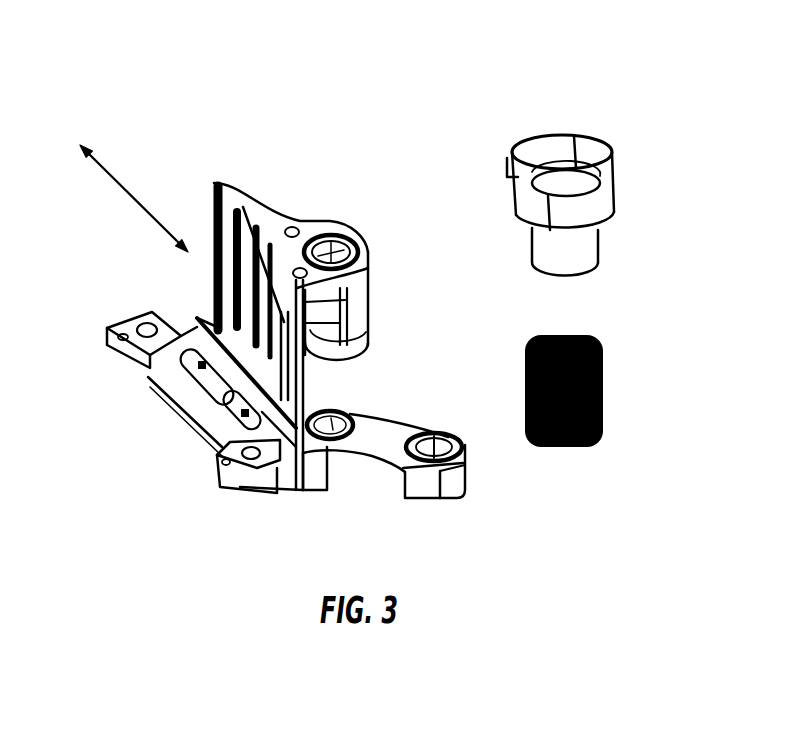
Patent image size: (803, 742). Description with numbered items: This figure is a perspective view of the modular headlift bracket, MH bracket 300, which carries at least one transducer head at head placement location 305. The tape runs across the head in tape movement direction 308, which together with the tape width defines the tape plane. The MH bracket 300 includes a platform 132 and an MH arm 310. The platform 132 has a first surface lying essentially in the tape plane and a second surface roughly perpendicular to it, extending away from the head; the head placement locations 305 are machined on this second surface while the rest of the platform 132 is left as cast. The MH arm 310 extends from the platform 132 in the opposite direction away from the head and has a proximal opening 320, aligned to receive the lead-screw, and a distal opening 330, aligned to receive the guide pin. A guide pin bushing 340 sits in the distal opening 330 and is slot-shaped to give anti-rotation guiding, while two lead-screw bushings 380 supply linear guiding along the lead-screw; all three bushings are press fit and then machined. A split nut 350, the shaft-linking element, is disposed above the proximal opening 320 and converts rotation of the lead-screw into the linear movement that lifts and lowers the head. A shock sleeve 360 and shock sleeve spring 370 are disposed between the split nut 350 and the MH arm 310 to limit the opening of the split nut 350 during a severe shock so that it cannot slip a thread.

The MH bracket 300 is at (263, 54).
The tape movement direction 308 is at (136, 204).
The platform 132 is at (172, 402).
The head placement location 305 is at (108, 348).
The MH arm 310 is at (382, 475).
The proximal opening 320 is at (338, 232).
The distal opening 330 is at (445, 437).
The guide pin bushing 340 is at (465, 458).
The split nut 350 is at (366, 308).
The shock sleeve 360 is at (602, 202).
The shock sleeve spring 370 is at (605, 397).
The lead-screw bushings 380 is at (318, 237).